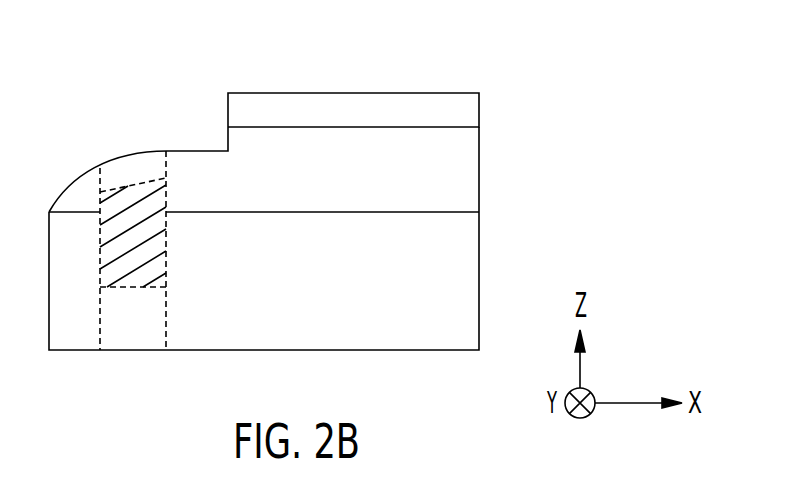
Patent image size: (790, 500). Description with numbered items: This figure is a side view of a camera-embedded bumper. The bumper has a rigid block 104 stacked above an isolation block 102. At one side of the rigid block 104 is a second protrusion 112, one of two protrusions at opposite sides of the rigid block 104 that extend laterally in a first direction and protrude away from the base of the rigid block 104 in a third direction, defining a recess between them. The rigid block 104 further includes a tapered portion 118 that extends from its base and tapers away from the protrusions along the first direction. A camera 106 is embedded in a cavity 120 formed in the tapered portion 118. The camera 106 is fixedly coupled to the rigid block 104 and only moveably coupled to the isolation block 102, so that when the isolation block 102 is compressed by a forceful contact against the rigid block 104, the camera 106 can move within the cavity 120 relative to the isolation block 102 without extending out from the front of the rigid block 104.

The isolation block 102 is at (458, 275).
The rigid block 104 is at (327, 188).
The second protrusion 112 is at (444, 94).
The tapered portion 118 is at (68, 190).
The camera 106 is at (100, 237).
The cavity 120 is at (135, 333).